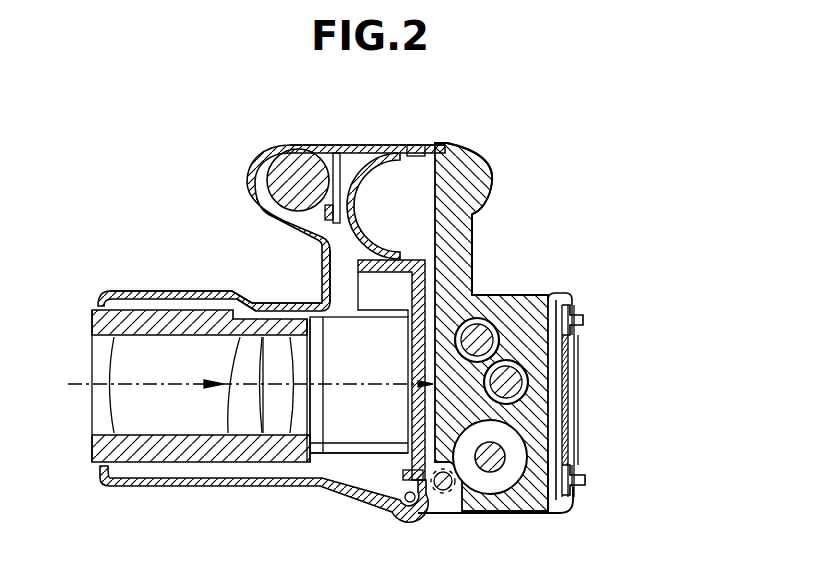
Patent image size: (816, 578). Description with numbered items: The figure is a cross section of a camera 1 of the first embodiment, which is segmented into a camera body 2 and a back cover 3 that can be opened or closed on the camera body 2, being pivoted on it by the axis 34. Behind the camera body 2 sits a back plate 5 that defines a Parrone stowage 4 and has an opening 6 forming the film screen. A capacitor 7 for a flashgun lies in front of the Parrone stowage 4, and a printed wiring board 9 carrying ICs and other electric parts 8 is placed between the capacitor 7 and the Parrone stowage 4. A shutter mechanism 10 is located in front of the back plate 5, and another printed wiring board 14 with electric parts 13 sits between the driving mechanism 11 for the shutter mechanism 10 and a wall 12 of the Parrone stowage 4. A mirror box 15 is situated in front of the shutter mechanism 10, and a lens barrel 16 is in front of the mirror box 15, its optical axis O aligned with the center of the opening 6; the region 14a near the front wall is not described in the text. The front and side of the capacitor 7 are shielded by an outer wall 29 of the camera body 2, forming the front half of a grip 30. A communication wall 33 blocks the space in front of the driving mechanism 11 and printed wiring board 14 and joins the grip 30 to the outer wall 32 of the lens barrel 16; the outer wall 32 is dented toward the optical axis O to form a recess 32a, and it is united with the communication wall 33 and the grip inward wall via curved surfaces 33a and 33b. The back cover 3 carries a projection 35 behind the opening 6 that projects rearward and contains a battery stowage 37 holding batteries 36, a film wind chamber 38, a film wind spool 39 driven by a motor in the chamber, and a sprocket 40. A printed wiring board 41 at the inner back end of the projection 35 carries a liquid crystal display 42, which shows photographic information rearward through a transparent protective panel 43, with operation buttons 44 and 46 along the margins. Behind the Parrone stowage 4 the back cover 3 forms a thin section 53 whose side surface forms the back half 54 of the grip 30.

The camera 1 is at (252, 136).
The camera body 2 is at (154, 226).
The back cover 3 is at (600, 458).
The Parrone stowage 4 is at (412, 172).
The back plate 5 is at (422, 323).
The opening 6 is at (423, 367).
The capacitor 7 is at (300, 165).
The electric parts 8 is at (262, 206).
The printed wiring board 9 is at (337, 160).
The shutter mechanism 10 is at (410, 423).
The driving mechanism 11 is at (352, 297).
The wall 12 is at (462, 208).
The electric parts 13 is at (328, 256).
The printed wiring board 14 is at (470, 256).
The front wall opening 14a is at (263, 433).
The mirror box 15 is at (380, 450).
The lens barrel 16 is at (120, 318).
The outer wall 29 is at (250, 172).
The grip 30 is at (460, 124).
The outer wall 32 is at (192, 290).
The recess 32a is at (240, 337).
The communication wall 33 is at (305, 297).
The curved surface 33a is at (345, 486).
The curved surface 33b is at (368, 146).
The axis 34 is at (409, 503).
The projection 35 is at (562, 287).
The batteries 36 is at (510, 292).
The battery stowage 37 is at (570, 350).
The film wind chamber 38 is at (543, 497).
The film wind spool 39 is at (517, 472).
The sprocket 40 is at (447, 493).
The printed wiring board 41 is at (568, 362).
The liquid crystal display 42 is at (577, 382).
The transparent protective panel 43 is at (577, 427).
The operation button 44 is at (587, 485).
The operation button 46 is at (582, 320).
The thin section 53 is at (455, 240).
The back half 54 is at (497, 178).
The optical axis O is at (248, 374).